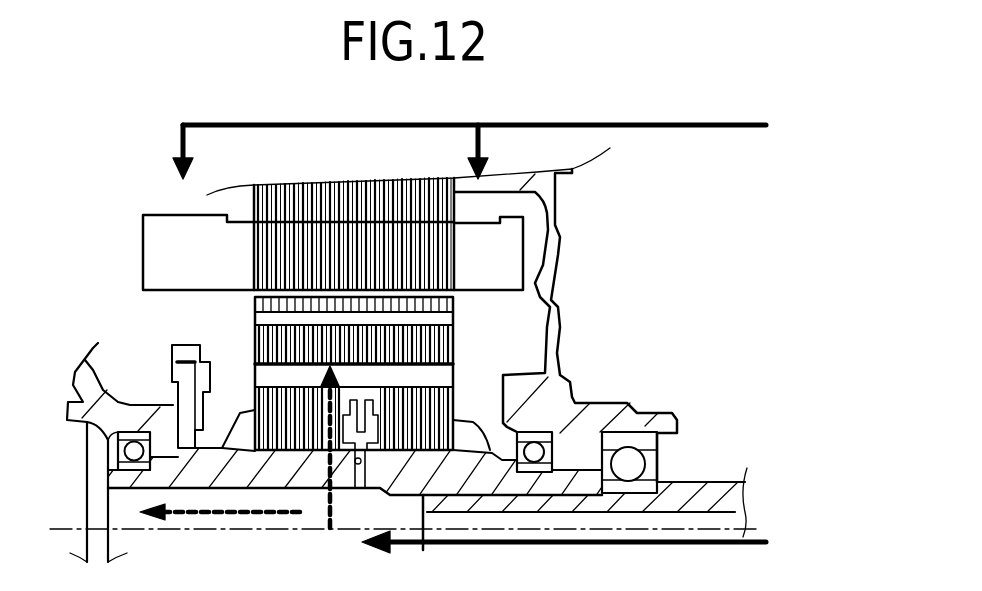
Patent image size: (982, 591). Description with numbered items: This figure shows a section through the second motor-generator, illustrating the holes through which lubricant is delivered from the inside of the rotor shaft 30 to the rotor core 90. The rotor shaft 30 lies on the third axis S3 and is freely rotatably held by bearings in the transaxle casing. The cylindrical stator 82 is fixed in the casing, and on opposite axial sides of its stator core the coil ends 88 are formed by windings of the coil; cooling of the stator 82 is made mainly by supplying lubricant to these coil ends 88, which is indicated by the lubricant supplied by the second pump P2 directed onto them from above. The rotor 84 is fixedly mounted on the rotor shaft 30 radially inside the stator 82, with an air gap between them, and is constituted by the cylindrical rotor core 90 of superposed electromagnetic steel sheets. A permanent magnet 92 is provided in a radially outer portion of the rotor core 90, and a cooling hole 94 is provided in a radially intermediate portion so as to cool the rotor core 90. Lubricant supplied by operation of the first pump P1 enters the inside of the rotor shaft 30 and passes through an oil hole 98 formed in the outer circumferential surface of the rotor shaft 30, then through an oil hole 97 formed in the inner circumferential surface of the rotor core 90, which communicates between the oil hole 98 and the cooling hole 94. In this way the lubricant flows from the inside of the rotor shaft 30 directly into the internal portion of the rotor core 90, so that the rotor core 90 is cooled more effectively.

The stator 82 is at (155, 176).
The coil ends 88 is at (155, 248).
The rotor 84 is at (505, 320).
The cooling hole 94 is at (447, 372).
The permanent magnet 92 is at (270, 318).
The oil hole 97 is at (368, 430).
The oil hole 98 is at (355, 458).
The rotor shaft 30 is at (213, 447).
The rotor core 90 is at (257, 398).
The first pump P1 is at (594, 542).
The second pump P2 is at (499, 137).
The third axis S3 is at (390, 530).